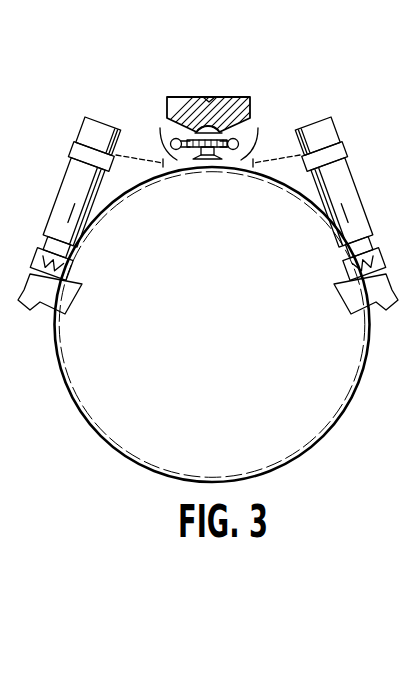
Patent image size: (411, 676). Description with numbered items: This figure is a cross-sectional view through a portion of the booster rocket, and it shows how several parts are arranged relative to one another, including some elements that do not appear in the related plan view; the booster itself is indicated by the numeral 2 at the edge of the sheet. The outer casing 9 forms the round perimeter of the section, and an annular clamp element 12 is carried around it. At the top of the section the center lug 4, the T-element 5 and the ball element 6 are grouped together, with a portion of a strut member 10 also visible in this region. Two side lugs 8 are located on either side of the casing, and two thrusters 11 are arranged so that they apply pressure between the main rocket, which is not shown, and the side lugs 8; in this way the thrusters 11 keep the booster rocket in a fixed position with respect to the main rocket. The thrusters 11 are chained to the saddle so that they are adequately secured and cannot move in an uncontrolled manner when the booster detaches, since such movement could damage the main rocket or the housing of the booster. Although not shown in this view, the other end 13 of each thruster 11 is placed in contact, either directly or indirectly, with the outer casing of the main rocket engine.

The pipe clamp 2 is at (3, 490).
The center lug 4 is at (180, 163).
The T-element 5 is at (249, 160).
The ball element 6 is at (209, 97).
The side lugs 8 is at (47, 307).
The outer casing 9 is at (361, 379).
The strut member 10 is at (221, 100).
The thrusters 11 is at (88, 125).
The annular clamp element 12 is at (180, 140).
The other end of thruster 13 is at (108, 118).